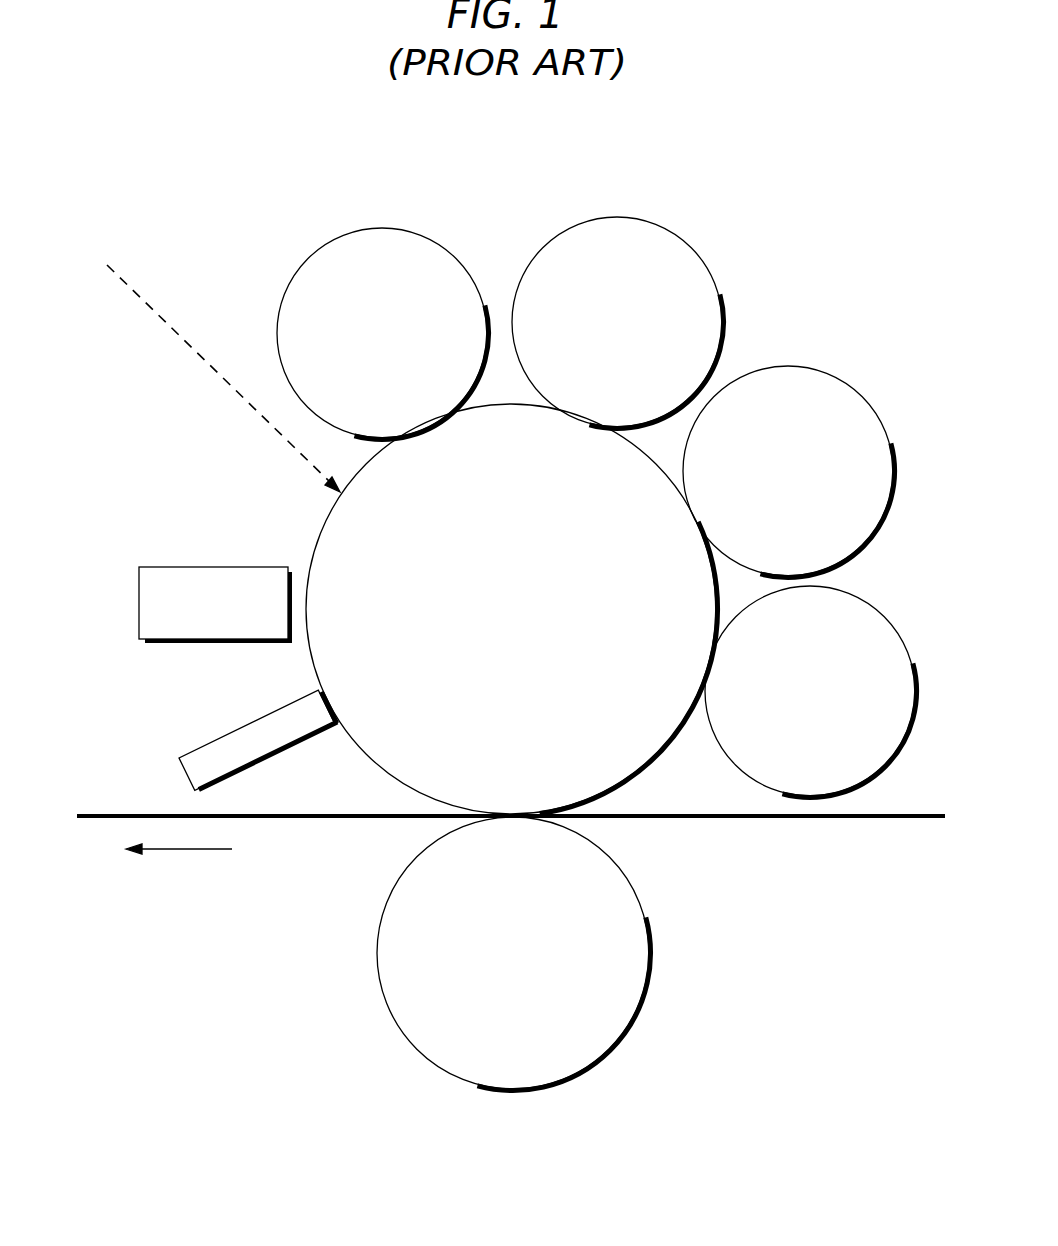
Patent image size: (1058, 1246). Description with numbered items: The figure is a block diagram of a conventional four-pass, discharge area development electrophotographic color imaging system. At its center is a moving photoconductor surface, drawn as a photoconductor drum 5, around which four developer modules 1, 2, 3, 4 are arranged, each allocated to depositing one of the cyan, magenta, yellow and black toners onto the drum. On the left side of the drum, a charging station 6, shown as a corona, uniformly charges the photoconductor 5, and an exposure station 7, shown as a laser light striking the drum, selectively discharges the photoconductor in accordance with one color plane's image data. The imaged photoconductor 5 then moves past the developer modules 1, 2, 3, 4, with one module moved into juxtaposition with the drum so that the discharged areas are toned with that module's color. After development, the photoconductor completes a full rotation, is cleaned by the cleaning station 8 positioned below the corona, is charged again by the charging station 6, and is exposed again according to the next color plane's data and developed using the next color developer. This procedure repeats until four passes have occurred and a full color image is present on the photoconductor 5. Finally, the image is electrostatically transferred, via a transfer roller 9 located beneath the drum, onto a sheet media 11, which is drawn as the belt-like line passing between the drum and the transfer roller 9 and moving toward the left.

The developer module 1 is at (346, 229).
The developer module 2 is at (589, 218).
The developer module 3 is at (805, 368).
The developer module 4 is at (888, 620).
The photoconductor drum 5 is at (366, 760).
The charging station 6 is at (152, 567).
The exposure station 7 is at (152, 308).
The cleaning station 8 is at (190, 747).
The transfer roller 9 is at (648, 930).
The sheet media 11 is at (116, 814).